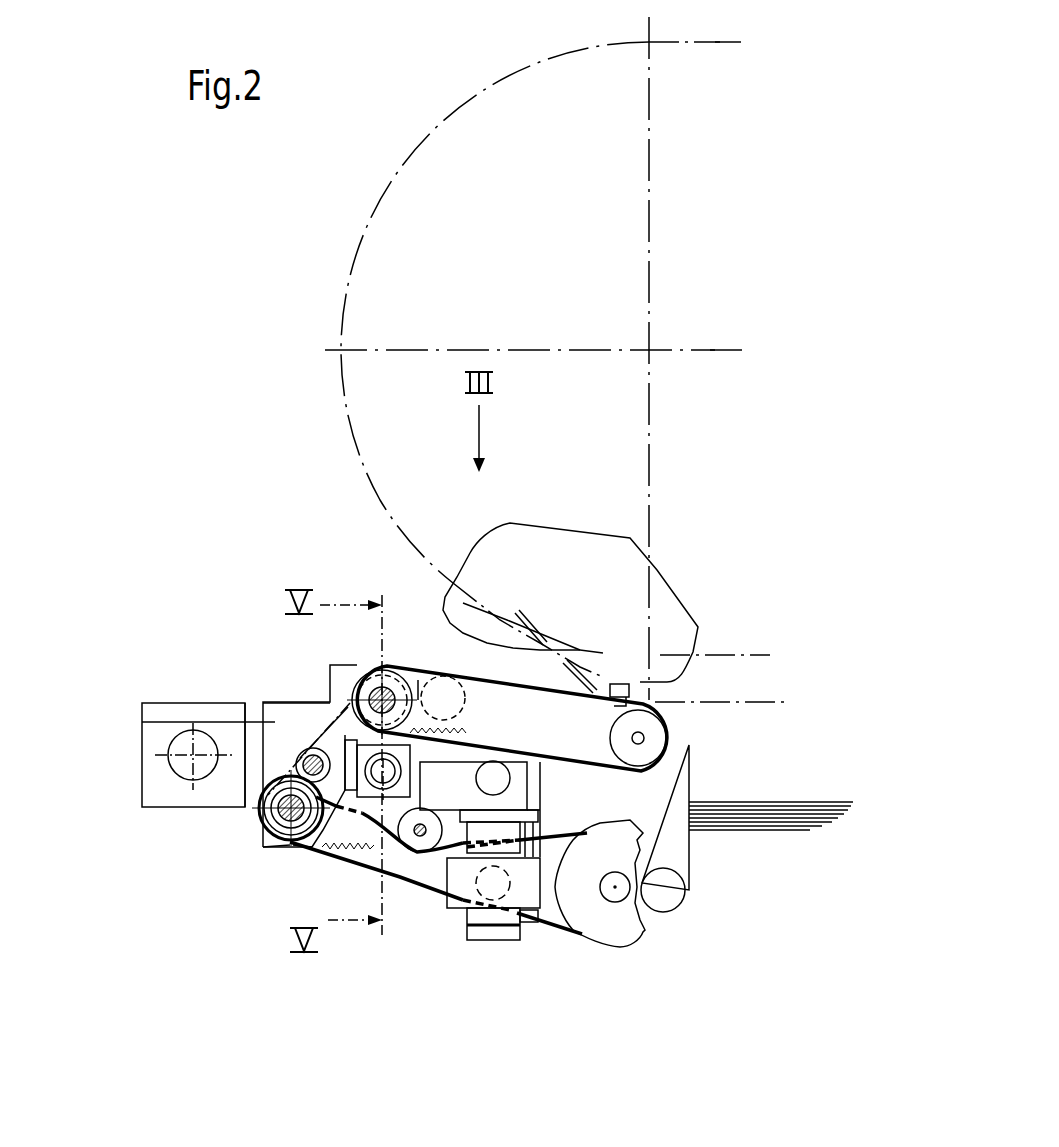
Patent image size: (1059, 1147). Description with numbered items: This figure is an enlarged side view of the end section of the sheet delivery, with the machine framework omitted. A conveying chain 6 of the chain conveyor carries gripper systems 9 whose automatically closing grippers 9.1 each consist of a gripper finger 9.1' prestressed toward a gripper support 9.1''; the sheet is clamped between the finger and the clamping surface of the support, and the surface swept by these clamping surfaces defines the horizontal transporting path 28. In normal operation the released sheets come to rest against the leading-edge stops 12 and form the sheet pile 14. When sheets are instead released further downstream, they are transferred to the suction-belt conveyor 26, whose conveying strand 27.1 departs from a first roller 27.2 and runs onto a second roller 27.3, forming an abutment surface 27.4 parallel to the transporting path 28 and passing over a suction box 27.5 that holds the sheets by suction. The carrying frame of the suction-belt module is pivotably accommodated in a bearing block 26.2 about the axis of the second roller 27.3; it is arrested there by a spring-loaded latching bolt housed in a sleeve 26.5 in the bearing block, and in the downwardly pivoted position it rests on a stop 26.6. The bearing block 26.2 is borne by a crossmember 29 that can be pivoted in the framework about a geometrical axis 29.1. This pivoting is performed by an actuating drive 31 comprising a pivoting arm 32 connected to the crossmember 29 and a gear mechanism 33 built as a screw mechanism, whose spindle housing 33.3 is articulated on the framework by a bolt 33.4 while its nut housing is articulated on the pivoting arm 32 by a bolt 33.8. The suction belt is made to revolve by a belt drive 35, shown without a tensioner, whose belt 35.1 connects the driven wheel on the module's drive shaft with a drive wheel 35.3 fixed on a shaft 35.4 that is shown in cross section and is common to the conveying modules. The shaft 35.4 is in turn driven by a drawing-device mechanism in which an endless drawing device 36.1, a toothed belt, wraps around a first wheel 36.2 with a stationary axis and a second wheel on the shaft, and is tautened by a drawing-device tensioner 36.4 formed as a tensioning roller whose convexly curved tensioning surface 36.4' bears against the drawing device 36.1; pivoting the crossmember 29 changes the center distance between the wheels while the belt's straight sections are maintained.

The conveying chain 6 is at (358, 248).
The gripper system 9 is at (623, 560).
The gripper 9.1 is at (596, 595).
The gripper finger 9.1' is at (523, 601).
The gripper support 9.1'' is at (704, 676).
The leading-edge stop 12 is at (690, 773).
The sheet pile 14 is at (787, 823).
The suction-belt conveyor 26 is at (601, 776).
The bearing block 26.2 is at (290, 832).
The sleeve 26.5 is at (370, 795).
The stop 26.6 is at (296, 764).
The conveying strand 27.1 is at (570, 700).
The first roller 27.2 is at (647, 757).
The second roller 27.3 is at (367, 667).
The abutment surface 27.4 is at (450, 674).
The suction box 27.5 is at (540, 728).
The transporting path 28 is at (767, 702).
The crossmember 29 is at (157, 800).
The geometrical axis 29.1 is at (193, 757).
The actuating drive 31 is at (503, 1050).
The pivoting arm 32 is at (457, 782).
The gear mechanism 33 is at (479, 985).
The spindle housing 33.3 is at (540, 892).
The bolt 33.4 is at (503, 890).
The bolt 33.8 is at (492, 765).
The belt drive 35 is at (303, 703).
The belt 35.1 is at (142, 722).
The drive wheel 35.3 is at (303, 835).
The shaft 35.4 is at (300, 835).
The endless drawing device 36.1 is at (307, 835).
The first wheel 36.2 is at (640, 927).
The drawing-device tensioner 36.4 is at (432, 903).
The tensioning surface 36.4' is at (331, 631).